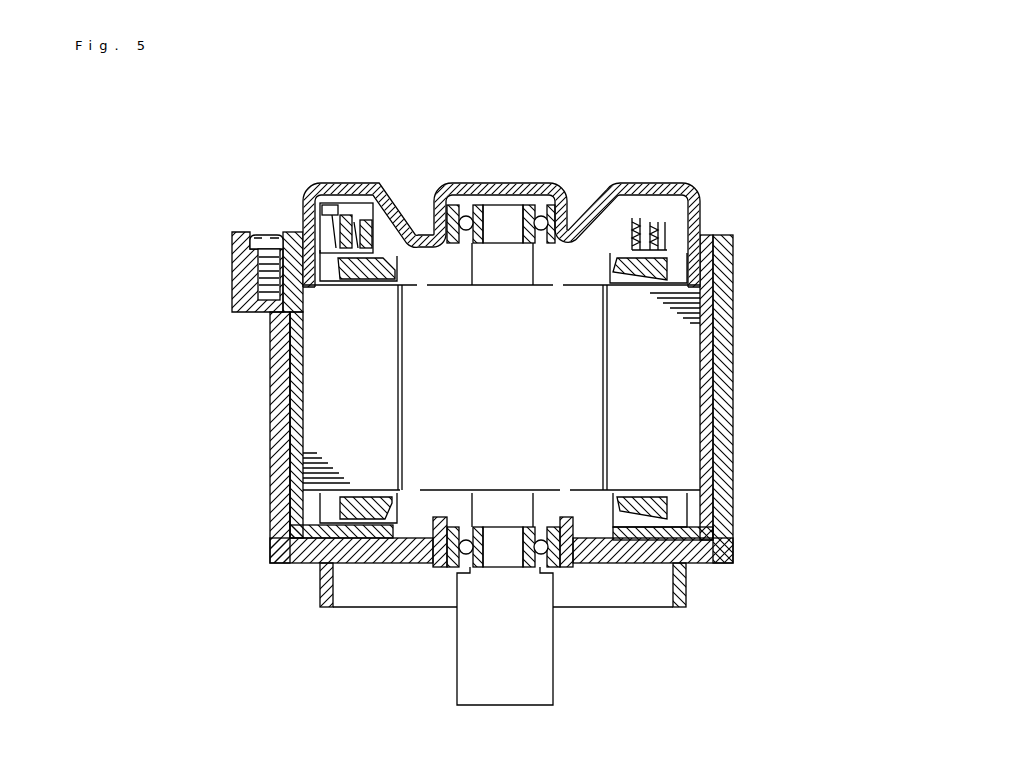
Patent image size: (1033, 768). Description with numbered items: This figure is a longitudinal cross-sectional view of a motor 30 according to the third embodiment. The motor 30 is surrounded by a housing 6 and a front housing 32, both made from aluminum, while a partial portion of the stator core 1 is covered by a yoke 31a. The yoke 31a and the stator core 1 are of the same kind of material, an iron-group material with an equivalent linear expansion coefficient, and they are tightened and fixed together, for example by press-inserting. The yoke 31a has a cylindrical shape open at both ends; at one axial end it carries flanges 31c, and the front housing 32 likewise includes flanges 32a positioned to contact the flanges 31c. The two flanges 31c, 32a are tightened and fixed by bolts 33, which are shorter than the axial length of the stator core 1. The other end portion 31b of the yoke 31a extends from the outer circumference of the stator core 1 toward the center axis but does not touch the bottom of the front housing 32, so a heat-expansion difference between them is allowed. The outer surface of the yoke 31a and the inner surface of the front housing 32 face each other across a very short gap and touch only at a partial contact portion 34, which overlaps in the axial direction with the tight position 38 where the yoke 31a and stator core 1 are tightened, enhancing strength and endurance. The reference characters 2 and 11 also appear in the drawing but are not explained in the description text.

The stator core 1 is at (702, 374).
The rotor 2 is at (580, 478).
The housing 6 is at (554, 184).
The output shaft 11 is at (548, 650).
The motor 30 is at (356, 192).
The yoke 31a is at (272, 410).
The other end portion 31b is at (738, 568).
The flange 31c is at (226, 270).
The front housing 32 is at (501, 428).
The flange 32a is at (228, 306).
The bolt 33 is at (264, 241).
The contact portion 34 is at (272, 466).
The tight position 38 is at (272, 450).